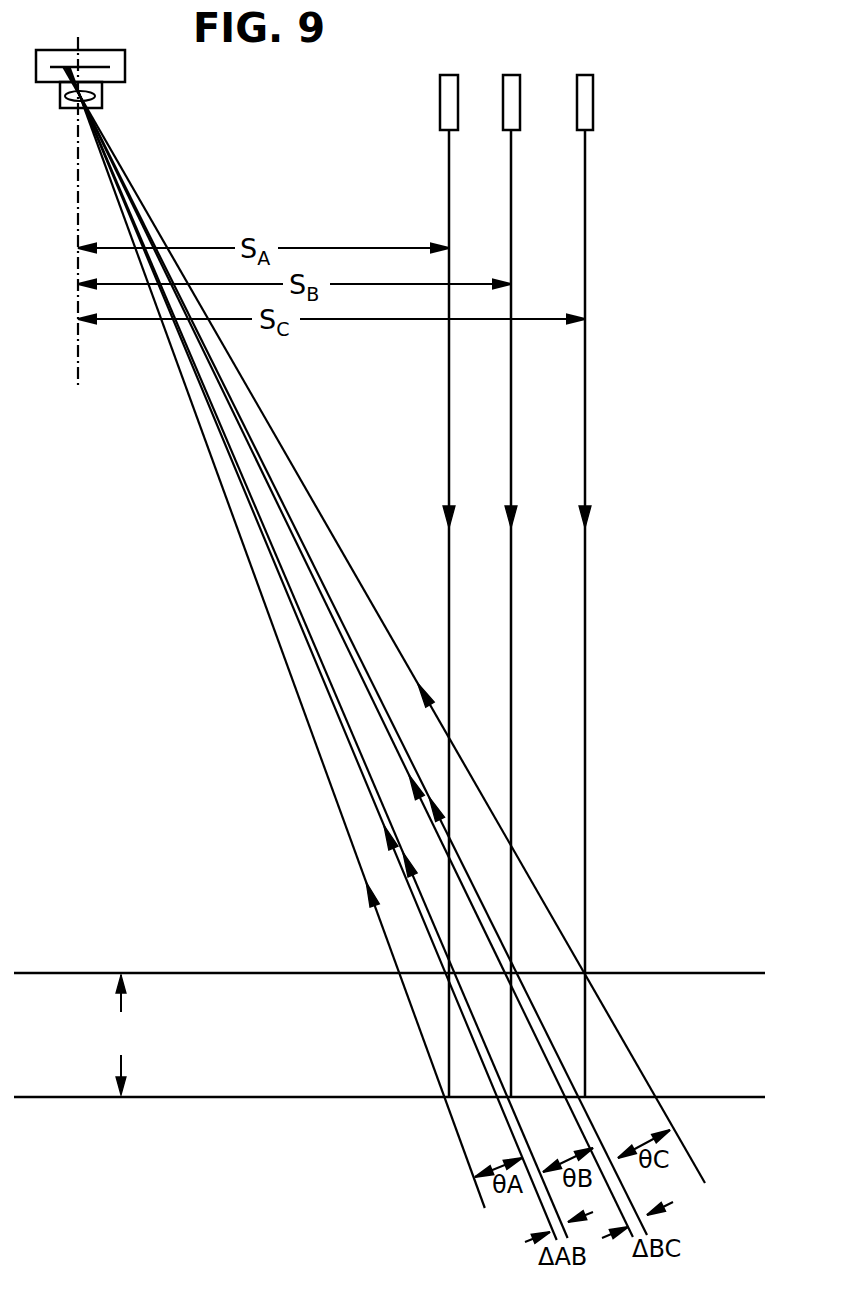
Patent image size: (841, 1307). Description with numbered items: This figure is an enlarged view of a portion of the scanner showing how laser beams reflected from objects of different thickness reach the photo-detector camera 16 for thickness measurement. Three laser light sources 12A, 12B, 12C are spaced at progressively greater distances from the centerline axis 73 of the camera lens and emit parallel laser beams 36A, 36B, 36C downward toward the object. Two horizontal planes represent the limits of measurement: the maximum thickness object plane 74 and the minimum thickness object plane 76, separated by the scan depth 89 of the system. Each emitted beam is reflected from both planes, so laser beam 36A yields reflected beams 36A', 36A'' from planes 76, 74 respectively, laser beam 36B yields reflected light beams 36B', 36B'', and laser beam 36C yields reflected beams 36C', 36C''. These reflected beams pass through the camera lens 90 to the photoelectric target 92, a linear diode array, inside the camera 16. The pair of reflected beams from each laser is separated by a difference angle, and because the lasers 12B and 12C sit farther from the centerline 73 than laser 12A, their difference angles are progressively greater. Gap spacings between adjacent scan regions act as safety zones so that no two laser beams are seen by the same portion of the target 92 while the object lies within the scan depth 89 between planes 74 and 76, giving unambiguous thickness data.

The camera 16 is at (97, 50).
The photoelectric target 92 is at (100, 69).
The camera lens 90 is at (97, 99).
The centerline axis 73 is at (76, 350).
The laser light source 12A is at (440, 88).
The laser light source 12B is at (503, 88).
The laser light source 12C is at (577, 88).
The laser beam 36A is at (424, 613).
The laser beam 36B is at (536, 613).
The laser beam 36C is at (613, 613).
The reflected beam 36A' is at (312, 653).
The reflected beam 36A'' is at (276, 637).
The reflected light beam 36B' is at (318, 652).
The reflected light beam 36B'' is at (349, 652).
The reflected beam 36C' is at (356, 651).
The reflected beam 36C'' is at (384, 625).
The maximum thickness object plane 74 is at (627, 972).
The minimum thickness object plane 76 is at (673, 1096).
The scan depth 89 is at (122, 1035).